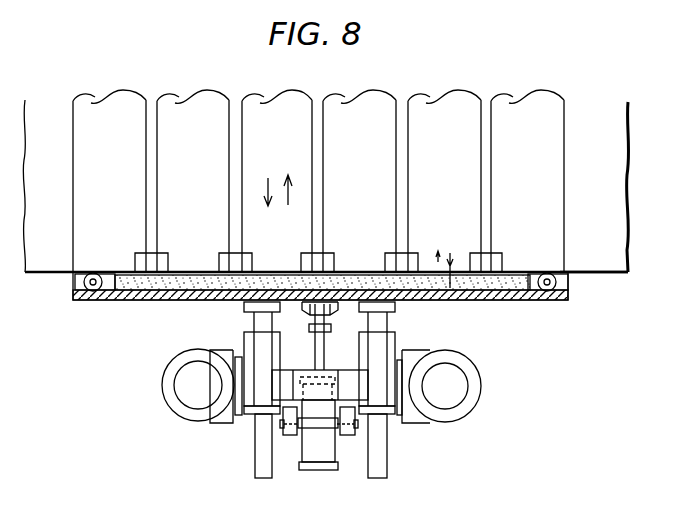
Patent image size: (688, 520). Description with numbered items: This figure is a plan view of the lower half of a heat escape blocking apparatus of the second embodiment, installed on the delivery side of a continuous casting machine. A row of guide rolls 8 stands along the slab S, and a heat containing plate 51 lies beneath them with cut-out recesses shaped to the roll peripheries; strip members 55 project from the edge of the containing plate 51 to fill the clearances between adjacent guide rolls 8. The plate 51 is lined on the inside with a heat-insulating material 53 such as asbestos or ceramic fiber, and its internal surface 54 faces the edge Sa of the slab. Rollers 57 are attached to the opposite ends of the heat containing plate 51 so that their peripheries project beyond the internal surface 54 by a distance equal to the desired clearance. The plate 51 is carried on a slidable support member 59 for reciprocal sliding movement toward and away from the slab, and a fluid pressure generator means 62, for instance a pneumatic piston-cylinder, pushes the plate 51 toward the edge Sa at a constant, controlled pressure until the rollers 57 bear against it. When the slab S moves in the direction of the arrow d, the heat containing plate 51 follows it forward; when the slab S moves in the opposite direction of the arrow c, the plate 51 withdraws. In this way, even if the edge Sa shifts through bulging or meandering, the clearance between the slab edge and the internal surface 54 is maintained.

The guide roll 8 is at (564, 181).
The heat containing plate 51 is at (454, 312).
The heat-insulating material 53 is at (493, 291).
The internal surface 54 is at (190, 277).
The strip members 55 is at (500, 256).
The rollers 57 is at (548, 296).
The slidable support member 59 is at (396, 473).
The fluid pressure generator means 62 is at (320, 470).
The slab S is at (47, 250).
The edge of the slab Sa is at (590, 273).
The arrow c is at (266, 198).
The arrow d is at (290, 190).